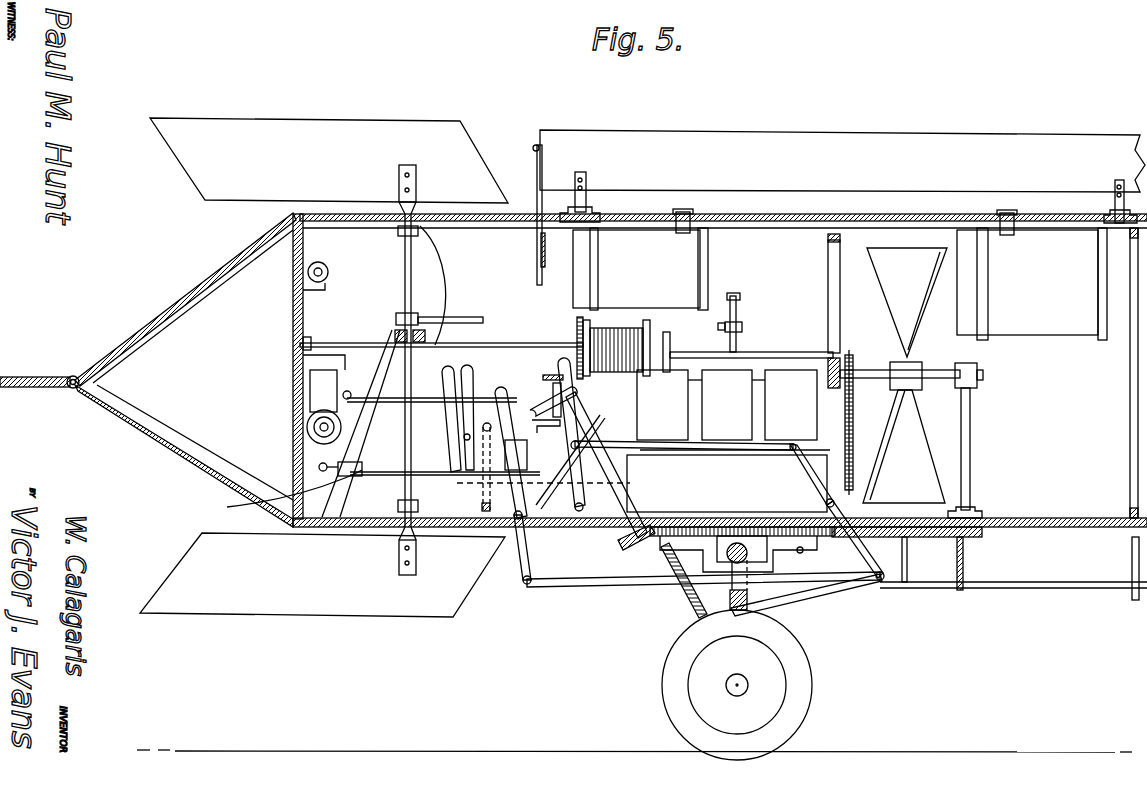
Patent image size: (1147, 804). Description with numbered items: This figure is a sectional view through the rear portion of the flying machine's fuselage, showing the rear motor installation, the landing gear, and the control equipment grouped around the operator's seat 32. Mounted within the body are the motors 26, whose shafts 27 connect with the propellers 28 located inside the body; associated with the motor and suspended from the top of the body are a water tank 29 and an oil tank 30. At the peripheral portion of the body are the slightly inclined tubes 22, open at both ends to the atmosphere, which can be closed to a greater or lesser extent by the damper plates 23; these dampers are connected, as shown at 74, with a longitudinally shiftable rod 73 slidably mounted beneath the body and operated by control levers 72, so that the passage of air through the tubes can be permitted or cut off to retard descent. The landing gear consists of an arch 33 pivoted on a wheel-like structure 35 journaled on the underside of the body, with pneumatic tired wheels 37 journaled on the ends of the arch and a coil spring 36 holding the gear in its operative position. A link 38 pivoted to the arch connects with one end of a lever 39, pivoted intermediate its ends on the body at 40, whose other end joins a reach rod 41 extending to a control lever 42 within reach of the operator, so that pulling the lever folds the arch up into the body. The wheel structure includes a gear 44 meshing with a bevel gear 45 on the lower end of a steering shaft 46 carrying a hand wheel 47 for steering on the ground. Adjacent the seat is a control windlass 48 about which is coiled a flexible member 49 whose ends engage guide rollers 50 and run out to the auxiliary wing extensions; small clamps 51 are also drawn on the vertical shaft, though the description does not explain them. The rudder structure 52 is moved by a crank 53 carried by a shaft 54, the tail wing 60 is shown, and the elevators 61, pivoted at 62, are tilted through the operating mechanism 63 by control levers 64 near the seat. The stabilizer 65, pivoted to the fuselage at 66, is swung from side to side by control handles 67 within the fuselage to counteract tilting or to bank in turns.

The tubes 22 is at (396, 312).
The damper plates 23 is at (358, 472).
The motors 26 is at (727, 405).
The shafts 27 is at (858, 472).
The propellers 28 is at (911, 383).
The water tank 29 is at (1032, 284).
The oil tank 30 is at (640, 269).
The seat 32 is at (500, 515).
The arch 33 is at (690, 588).
The wheel-like structure 35 is at (760, 522).
The coil spring 36 is at (690, 592).
The pneumatic tired wheels 37 is at (800, 707).
The link 38 is at (785, 595).
The lever 39 is at (873, 560).
The pivot 40 is at (848, 503).
The reach rod 41 is at (720, 447).
The control lever 42 is at (578, 418).
The gear 44 is at (656, 527).
The bevel gear 45 is at (641, 535).
The steering shaft 46 is at (590, 520).
The hand wheel 47 is at (578, 392).
The control windlass 48 is at (578, 338).
The flexible member 49 is at (656, 339).
The guide rollers 50 is at (640, 324).
The clamp 51 is at (398, 232).
The rudder structure 52 is at (262, 125).
The crank 53 is at (470, 320).
The shaft 54 is at (405, 293).
The tail wing 60 is at (82, 378).
The elevators 61 is at (28, 376).
The pivot 62 is at (72, 390).
The operating mechanism 63 is at (432, 390).
The control levers 64 is at (472, 378).
The stabilizer 65 is at (888, 152).
The pivot 66 is at (585, 205).
The control handles 67 is at (537, 266).
The control levers 72 is at (489, 424).
The longitudinally shiftable rod 73 is at (365, 514).
The connection 74 is at (232, 507).